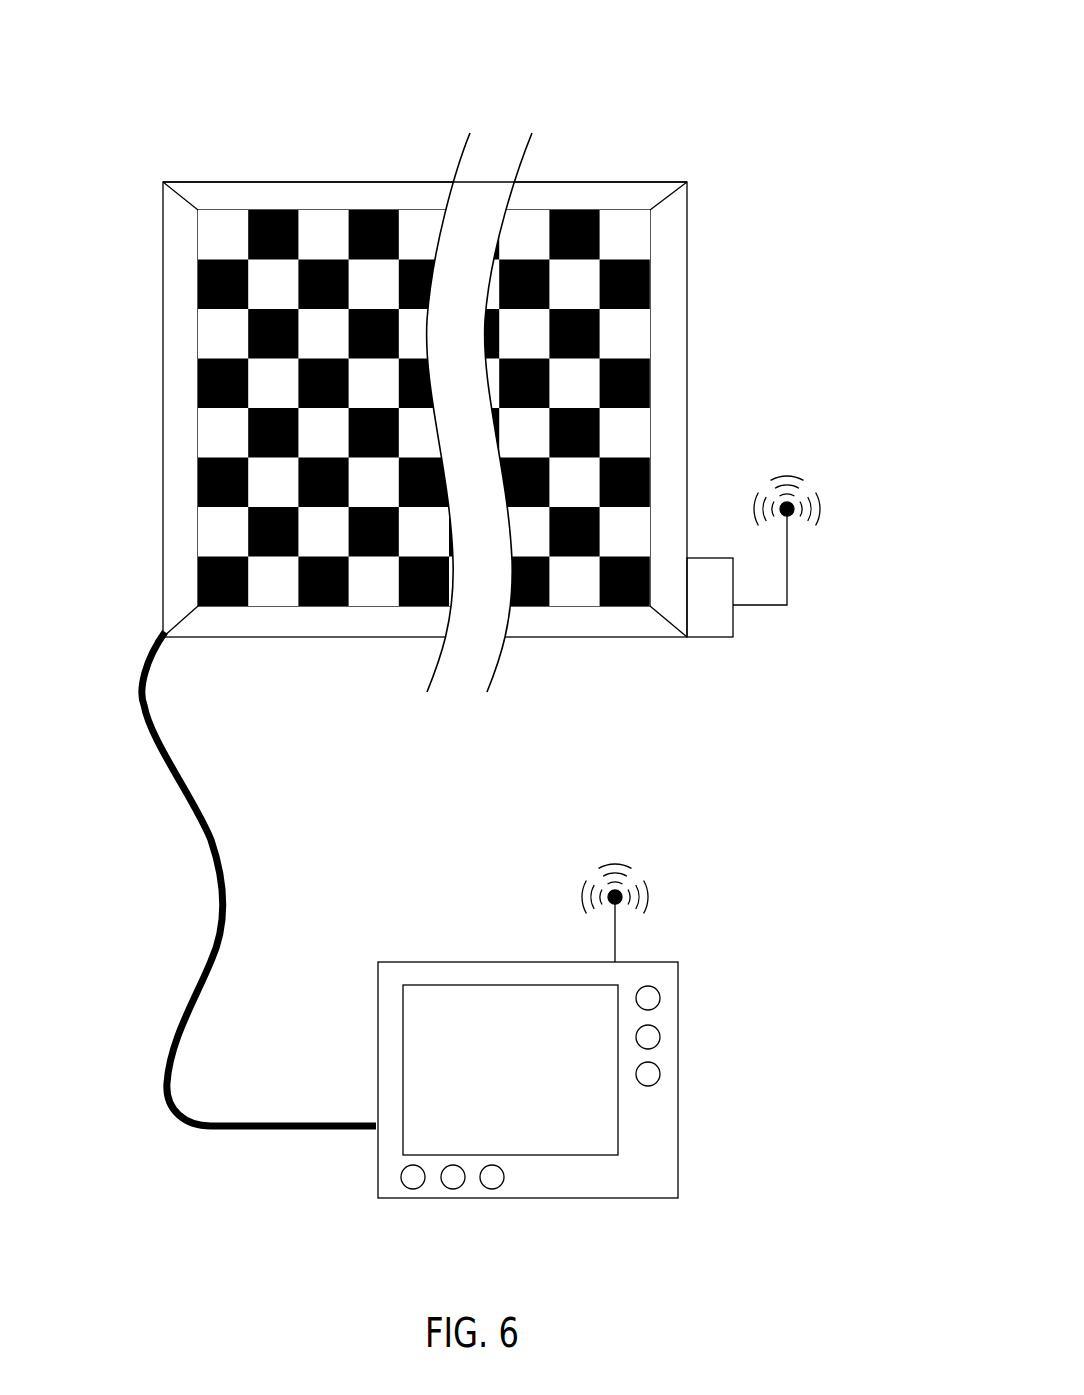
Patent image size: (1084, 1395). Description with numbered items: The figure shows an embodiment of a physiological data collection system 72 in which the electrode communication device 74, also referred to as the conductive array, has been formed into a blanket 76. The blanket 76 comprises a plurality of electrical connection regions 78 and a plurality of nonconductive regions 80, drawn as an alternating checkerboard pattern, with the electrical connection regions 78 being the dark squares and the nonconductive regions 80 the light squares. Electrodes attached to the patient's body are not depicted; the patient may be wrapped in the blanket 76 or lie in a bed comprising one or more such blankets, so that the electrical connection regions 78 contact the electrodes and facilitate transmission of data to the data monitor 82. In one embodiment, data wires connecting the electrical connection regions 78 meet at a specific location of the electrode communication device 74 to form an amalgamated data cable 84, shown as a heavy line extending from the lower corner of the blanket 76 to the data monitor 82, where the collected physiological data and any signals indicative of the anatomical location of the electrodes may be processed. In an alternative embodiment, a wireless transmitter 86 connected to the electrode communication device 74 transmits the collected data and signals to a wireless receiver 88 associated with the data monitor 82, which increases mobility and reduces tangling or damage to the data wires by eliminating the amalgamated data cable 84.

The physiological data collection system 72 is at (889, 56).
The electrode communication device 74 is at (424, 407).
The blanket 76 is at (425, 407).
The electrical connection regions 78 is at (577, 210).
The nonconductive regions 80 is at (424, 210).
The data monitor 82 is at (640, 1198).
The amalgamated data cable 84 is at (207, 833).
The wireless transmitter 86 is at (787, 563).
The wireless receiver 88 is at (615, 935).